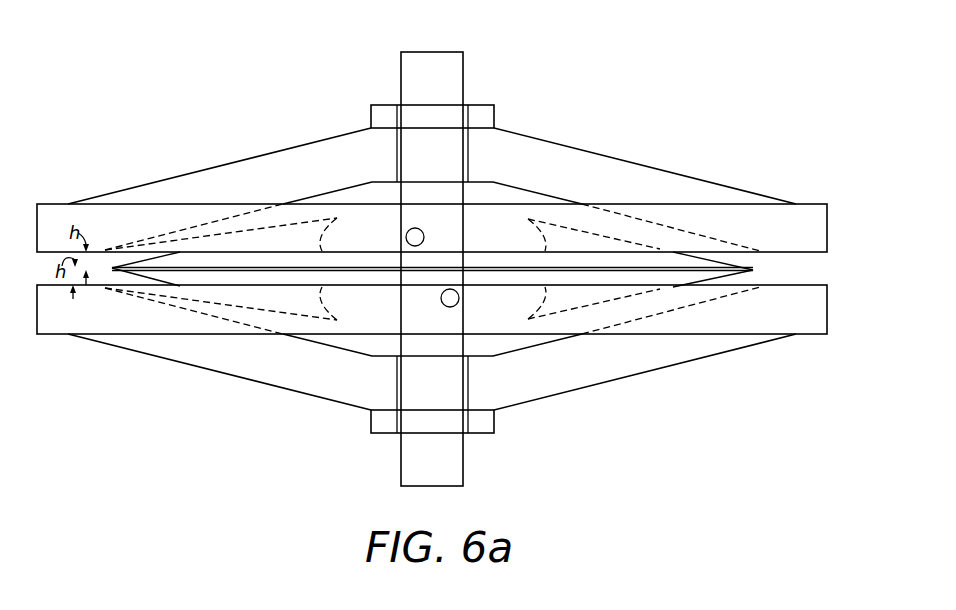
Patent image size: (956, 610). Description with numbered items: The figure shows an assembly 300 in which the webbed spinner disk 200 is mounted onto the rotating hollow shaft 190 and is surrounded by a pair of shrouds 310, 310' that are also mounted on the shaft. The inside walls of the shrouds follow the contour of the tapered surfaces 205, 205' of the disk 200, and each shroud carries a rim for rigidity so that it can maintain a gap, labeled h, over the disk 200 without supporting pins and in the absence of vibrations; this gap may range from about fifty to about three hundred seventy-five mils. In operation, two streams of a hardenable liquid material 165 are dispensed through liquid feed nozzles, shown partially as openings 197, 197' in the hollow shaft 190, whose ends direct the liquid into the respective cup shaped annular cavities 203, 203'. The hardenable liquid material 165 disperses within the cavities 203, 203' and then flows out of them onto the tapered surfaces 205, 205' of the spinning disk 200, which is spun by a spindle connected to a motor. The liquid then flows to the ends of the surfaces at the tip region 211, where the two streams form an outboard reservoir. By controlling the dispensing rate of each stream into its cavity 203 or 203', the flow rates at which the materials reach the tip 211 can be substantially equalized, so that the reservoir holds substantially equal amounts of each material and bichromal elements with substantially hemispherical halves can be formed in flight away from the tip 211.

The hardenable liquid material 165 is at (434, 61).
The hollow shaft 190 is at (464, 84).
The assembly 300 is at (569, 110).
The shroud 310 is at (432, 164).
The shroud 310' is at (432, 375).
The cup shaped annular cavity 203 is at (432, 209).
The cup shaped annular cavity 203' is at (432, 327).
The tip region 211 is at (753, 271).
The webbed disk 200 is at (577, 234).
The tapered surface 205 is at (652, 234).
The tapered surface 205' is at (443, 310).
The opening 197 is at (433, 227).
The opening 197' is at (433, 310).